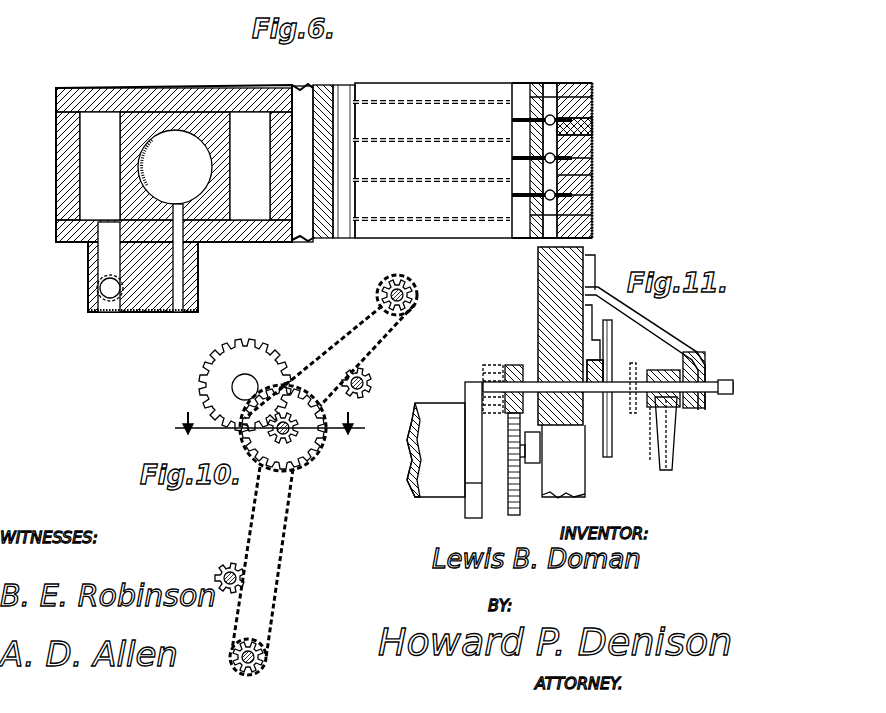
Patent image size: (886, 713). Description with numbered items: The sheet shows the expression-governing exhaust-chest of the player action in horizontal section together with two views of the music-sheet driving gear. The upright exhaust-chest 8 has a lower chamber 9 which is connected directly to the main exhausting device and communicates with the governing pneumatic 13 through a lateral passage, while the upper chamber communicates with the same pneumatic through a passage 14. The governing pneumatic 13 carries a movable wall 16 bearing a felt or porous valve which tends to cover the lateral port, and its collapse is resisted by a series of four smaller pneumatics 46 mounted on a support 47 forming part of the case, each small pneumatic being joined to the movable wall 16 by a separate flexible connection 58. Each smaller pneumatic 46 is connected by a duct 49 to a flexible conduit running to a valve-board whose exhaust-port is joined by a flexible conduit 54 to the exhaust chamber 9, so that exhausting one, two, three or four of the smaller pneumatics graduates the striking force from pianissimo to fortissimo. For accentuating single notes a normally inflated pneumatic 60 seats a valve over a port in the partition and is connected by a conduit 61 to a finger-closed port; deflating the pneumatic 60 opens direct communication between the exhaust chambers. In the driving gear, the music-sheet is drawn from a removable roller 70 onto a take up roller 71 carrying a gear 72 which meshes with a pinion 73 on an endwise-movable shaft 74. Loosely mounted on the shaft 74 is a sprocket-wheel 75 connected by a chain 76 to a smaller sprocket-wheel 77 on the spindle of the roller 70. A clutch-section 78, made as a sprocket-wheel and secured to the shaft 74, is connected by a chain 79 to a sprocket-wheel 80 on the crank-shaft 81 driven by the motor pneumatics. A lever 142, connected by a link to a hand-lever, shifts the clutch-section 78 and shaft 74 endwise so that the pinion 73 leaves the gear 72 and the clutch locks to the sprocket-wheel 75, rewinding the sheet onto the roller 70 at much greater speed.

In FIG. 6, the exhaust-chest 8 is at (116, 88).
In FIG. 6, the lower chamber 9 is at (95, 184).
In FIG. 6, the governing pneumatic 13 is at (323, 92).
In FIG. 6, the movable wall 16 is at (322, 240).
In FIG. 6, the smaller pneumatics 46 is at (540, 136).
In FIG. 6, the support 47 is at (594, 127).
In FIG. 6, the duct 49 is at (592, 100).
In FIG. 6, the flexible conduit 54 is at (98, 289).
In FIG. 6, the flexible connection 58 is at (420, 114).
In FIG. 6, the pneumatic 60 is at (175, 167).
In FIG. 6, the conduit 61 is at (178, 290).
In FIG. 10, the passage 14 is at (270, 426).
In FIG. 10, the roller 70 is at (403, 300).
In FIG. 10, the take up roller 71 is at (245, 383).
In FIG. 11, the take up roller 71 is at (432, 487).
In FIG. 10, the gear 72 is at (253, 345).
In FIG. 11, the gear 72 is at (520, 508).
In FIG. 11, the pinion 73 is at (515, 365).
In FIG. 10, the shaft 74 is at (272, 431).
In FIG. 11, the shaft 74 is at (726, 380).
In FIG. 10, the sprocket-wheel 75 is at (306, 453).
In FIG. 11, the sprocket-wheel 75 is at (640, 464).
In FIG. 10, the chain 76 is at (330, 330).
In FIG. 10, the sprocket-wheel 77 is at (414, 291).
In FIG. 11, the clutch-section 78 is at (634, 365).
In FIG. 10, the chain 79 is at (262, 508).
In FIG. 10, the sprocket-wheel 80 is at (262, 650).
In FIG. 10, the crank-shaft 81 is at (254, 657).
In FIG. 11, the lever 142 is at (675, 440).